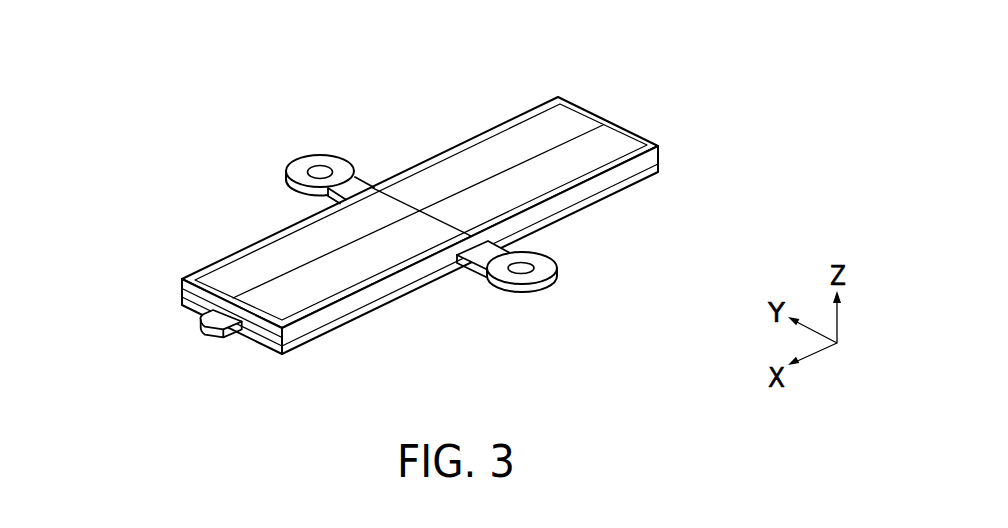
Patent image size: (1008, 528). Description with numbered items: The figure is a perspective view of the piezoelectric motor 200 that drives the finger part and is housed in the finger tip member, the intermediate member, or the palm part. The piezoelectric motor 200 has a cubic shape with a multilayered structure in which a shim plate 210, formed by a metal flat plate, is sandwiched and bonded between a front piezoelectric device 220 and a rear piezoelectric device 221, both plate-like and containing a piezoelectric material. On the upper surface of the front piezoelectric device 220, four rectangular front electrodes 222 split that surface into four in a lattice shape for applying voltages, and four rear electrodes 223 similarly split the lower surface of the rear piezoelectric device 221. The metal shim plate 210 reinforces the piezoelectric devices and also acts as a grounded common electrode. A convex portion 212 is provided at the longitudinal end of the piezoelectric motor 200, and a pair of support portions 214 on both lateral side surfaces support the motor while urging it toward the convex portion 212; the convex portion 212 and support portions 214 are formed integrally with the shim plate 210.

The piezoelectric motor 200 is at (409, 235).
The shim plate 210 is at (469, 243).
The convex portion 212 is at (198, 337).
The support portions 214 is at (333, 201).
The front piezoelectric device 220 is at (420, 225).
The rear piezoelectric device 221 is at (663, 168).
The front electrodes 222 is at (355, 262).
The rear electrodes 223 is at (422, 310).